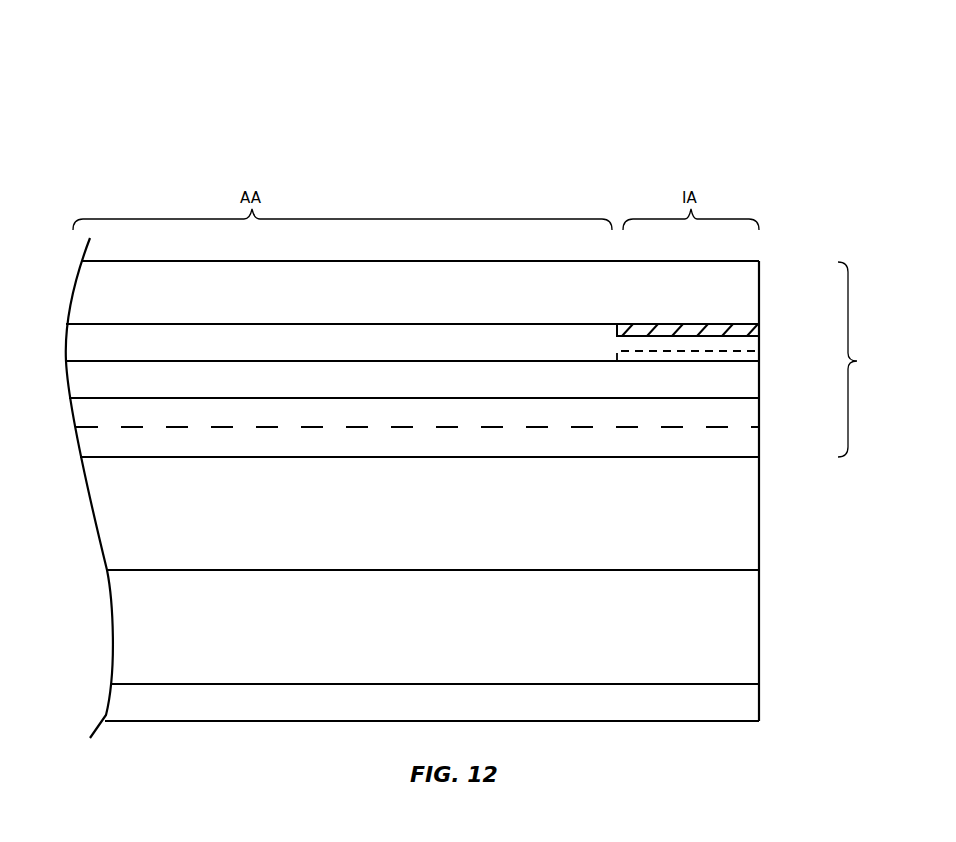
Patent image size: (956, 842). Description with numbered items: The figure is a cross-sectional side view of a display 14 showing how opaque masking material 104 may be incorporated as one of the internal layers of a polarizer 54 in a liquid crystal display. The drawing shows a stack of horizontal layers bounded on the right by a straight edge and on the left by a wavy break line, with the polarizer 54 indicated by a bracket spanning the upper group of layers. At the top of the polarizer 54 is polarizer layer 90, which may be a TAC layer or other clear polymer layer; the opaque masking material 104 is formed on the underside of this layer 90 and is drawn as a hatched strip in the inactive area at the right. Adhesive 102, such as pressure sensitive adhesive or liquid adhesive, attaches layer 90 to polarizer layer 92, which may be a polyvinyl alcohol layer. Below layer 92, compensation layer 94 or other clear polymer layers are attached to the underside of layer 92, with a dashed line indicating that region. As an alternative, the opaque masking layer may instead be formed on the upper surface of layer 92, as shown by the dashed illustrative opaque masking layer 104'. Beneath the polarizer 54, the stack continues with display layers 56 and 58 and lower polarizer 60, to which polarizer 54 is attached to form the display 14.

The display 14 is at (734, 81).
The polarizer layer 90 is at (752, 293).
The opaque masking material 104 is at (726, 339).
The opaque masking layer 104' is at (728, 364).
The adhesive 102 is at (72, 343).
The polarizer layer 92 is at (752, 380).
The compensation layer 94 is at (72, 413).
The polarizer 54 is at (858, 359).
The display layer 56 is at (752, 517).
The display layer 58 is at (752, 627).
The lower polarizer 60 is at (752, 703).